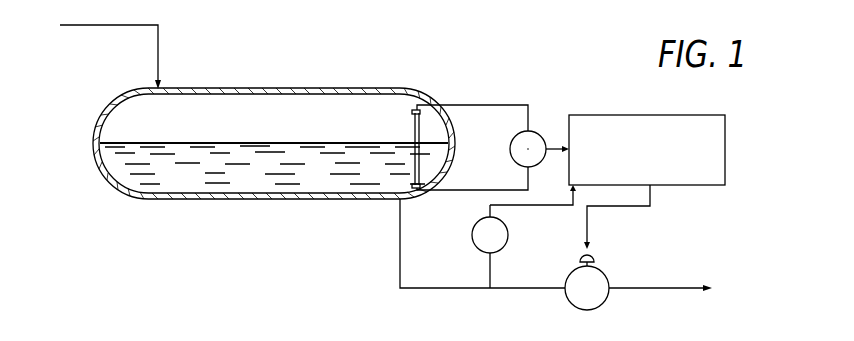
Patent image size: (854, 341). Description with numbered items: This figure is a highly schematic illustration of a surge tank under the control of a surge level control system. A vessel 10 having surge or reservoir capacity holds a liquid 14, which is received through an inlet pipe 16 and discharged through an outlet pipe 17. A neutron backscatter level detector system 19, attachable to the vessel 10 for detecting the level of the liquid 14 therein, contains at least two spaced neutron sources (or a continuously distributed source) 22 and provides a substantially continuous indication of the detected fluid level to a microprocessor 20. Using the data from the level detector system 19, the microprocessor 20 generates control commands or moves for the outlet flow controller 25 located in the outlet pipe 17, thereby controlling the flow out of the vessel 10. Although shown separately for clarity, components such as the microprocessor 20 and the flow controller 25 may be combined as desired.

The vessel 10 is at (290, 90).
The liquid 14 is at (170, 178).
The inlet pipe 16 is at (101, 27).
The outlet pipe 17 is at (400, 256).
The neutron backscatter level detector system 19 is at (540, 132).
The microprocessor 20 is at (700, 186).
The neutron sources 22 is at (407, 108).
The outlet flow controller 25 is at (572, 272).